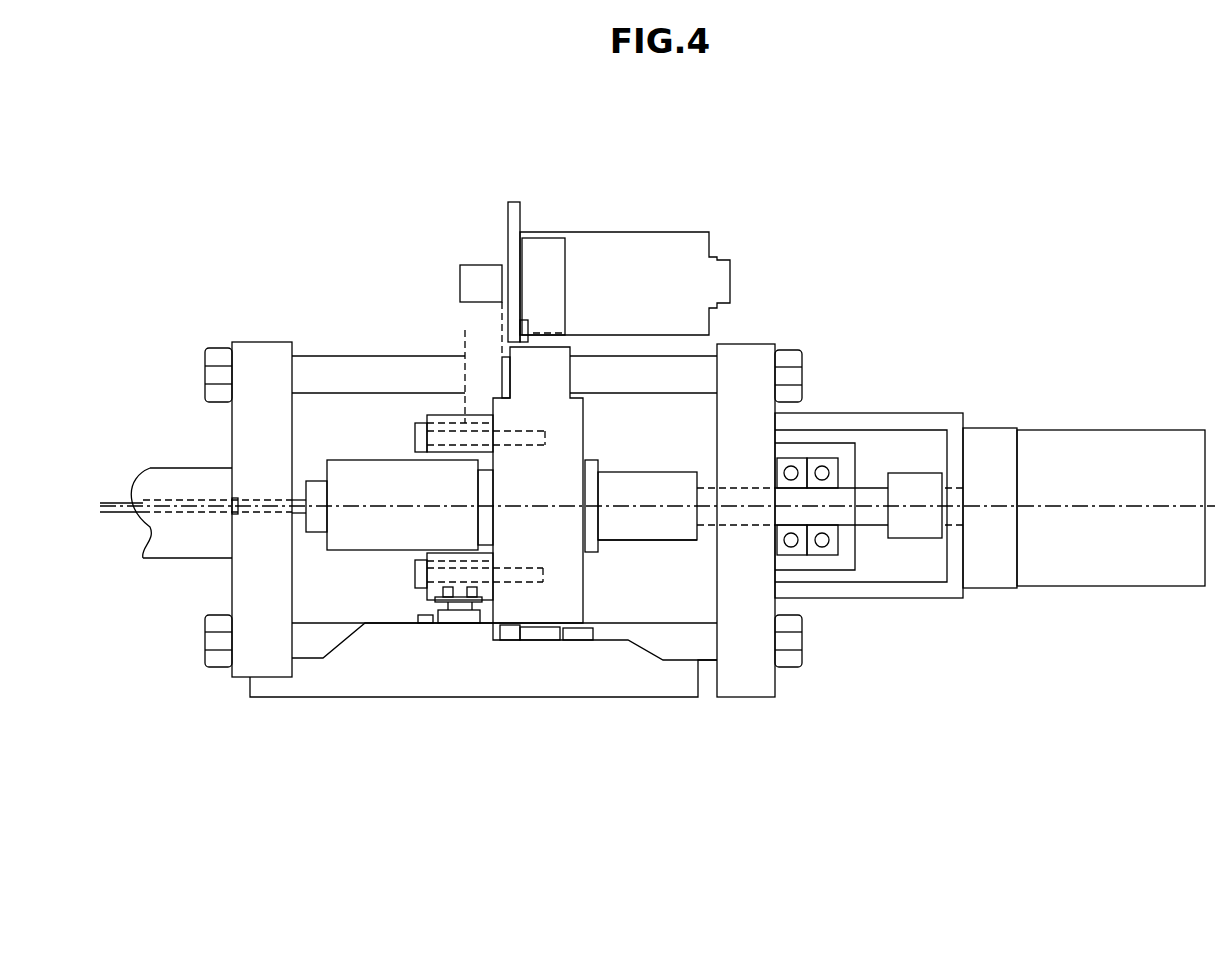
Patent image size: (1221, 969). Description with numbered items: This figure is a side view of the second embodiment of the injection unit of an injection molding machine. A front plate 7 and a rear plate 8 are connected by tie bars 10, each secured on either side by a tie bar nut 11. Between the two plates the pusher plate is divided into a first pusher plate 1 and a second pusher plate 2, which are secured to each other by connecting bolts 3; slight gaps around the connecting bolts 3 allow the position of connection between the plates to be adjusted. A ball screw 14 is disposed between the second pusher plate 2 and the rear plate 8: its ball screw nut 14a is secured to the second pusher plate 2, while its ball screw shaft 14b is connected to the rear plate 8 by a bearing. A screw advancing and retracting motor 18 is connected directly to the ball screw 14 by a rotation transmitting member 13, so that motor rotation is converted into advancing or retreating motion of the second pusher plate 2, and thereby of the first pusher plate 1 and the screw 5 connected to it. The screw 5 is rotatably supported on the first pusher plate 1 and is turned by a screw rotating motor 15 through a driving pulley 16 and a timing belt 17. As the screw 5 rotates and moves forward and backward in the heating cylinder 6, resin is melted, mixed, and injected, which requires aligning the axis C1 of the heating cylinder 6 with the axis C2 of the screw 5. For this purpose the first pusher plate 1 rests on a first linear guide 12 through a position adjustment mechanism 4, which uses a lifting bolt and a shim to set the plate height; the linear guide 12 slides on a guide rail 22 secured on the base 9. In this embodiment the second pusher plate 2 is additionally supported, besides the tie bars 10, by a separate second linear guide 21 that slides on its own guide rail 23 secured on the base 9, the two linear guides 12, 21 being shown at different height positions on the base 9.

The first pusher plate 1 is at (358, 462).
The second pusher plate 2 is at (572, 443).
The connecting bolts 3 is at (417, 427).
The position adjustment mechanism 4 is at (432, 598).
The screw 5 is at (178, 500).
The heating cylinder 6 is at (173, 560).
The front plate 7 is at (266, 342).
The rear plate 8 is at (752, 344).
The base 9 is at (352, 697).
The tie bars 10 is at (348, 355).
The tie bar nut 11 is at (215, 348).
The linear guide 12 is at (459, 625).
The rotation transmitting member 13 is at (907, 472).
The ball screw 14 is at (617, 545).
The ball screw nut 14a is at (655, 548).
The ball screw shaft 14b is at (870, 548).
The screw rotating motor 15 is at (622, 232).
The driving pulley 16 is at (478, 265).
The timing belt 17 is at (463, 335).
The screw advancing and retracting motor 18 is at (1108, 430).
The second linear guide 21 is at (545, 640).
The guide rail 22 is at (425, 622).
The guide rail 23 is at (580, 640).
The axis C1 is at (100, 514).
The axis C2 is at (100, 500).